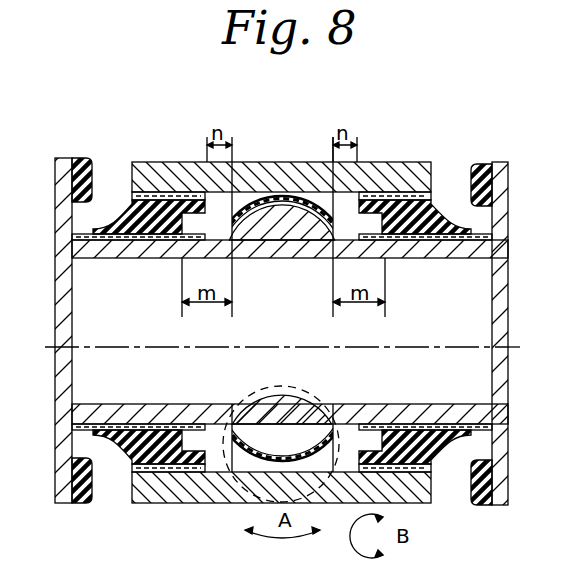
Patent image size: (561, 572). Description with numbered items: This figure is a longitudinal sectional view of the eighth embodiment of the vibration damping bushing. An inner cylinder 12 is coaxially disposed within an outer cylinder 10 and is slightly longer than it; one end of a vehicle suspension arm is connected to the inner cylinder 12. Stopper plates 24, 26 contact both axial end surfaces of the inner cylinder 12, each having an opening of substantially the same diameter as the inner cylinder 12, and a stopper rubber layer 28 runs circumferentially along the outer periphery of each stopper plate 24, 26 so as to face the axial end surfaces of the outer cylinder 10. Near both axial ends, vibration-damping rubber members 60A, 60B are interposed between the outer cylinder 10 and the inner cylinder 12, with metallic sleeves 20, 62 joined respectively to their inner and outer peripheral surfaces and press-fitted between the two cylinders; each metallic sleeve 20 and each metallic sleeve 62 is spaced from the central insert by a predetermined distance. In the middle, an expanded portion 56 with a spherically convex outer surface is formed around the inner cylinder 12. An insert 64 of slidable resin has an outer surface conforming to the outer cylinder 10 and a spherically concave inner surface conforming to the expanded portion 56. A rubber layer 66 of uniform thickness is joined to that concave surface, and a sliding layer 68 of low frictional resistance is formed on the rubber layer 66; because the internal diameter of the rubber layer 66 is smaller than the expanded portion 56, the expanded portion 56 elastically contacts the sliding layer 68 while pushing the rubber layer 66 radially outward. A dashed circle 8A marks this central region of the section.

The outer cylinder 10 is at (190, 162).
The inner cylinder 12 is at (142, 258).
The metallic sleeve 20 is at (100, 242).
The stopper plate 24 is at (60, 158).
The stopper plate 26 is at (508, 197).
The stopper rubber layer 28 is at (86, 158).
The expanded portion 56 is at (304, 178).
The vibration-damping rubber member 60A is at (122, 205).
The vibration-damping rubber member 60B is at (446, 205).
The metallic sleeve 62 is at (164, 192).
The insert 64 is at (250, 198).
The rubber layer 66 is at (282, 205).
The sliding layer 68 is at (262, 246).
The detail region 8A is at (222, 513).